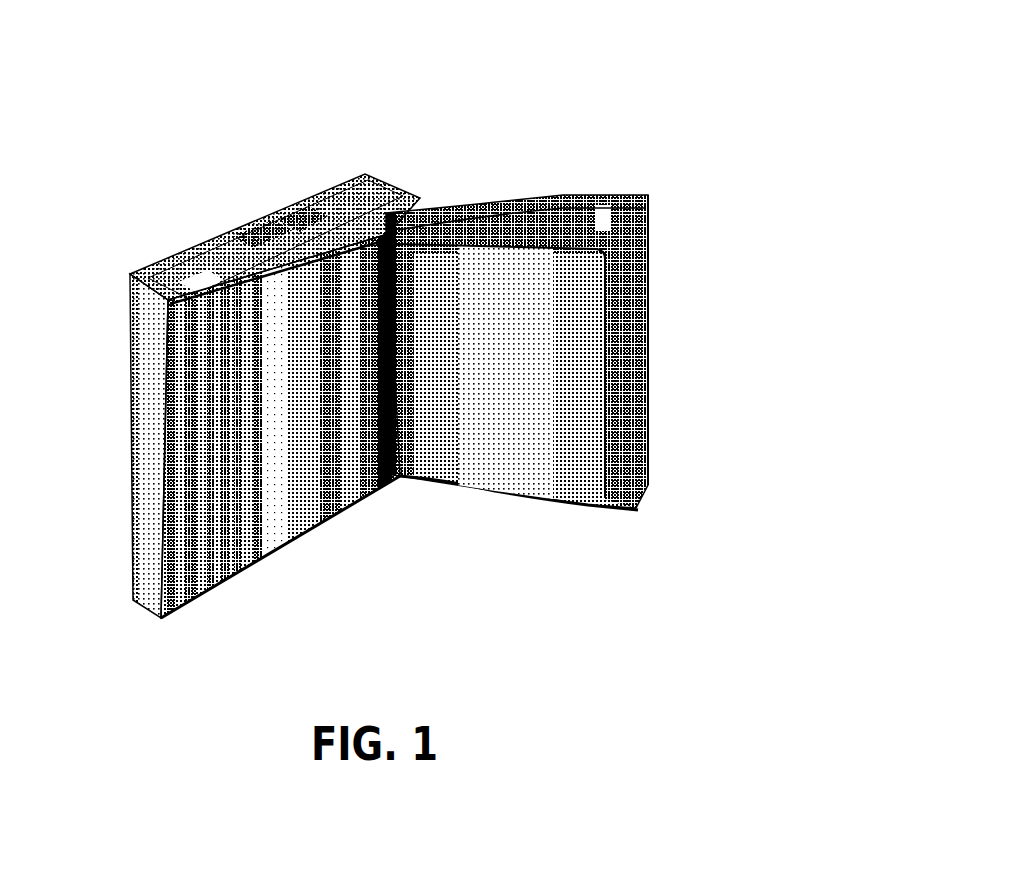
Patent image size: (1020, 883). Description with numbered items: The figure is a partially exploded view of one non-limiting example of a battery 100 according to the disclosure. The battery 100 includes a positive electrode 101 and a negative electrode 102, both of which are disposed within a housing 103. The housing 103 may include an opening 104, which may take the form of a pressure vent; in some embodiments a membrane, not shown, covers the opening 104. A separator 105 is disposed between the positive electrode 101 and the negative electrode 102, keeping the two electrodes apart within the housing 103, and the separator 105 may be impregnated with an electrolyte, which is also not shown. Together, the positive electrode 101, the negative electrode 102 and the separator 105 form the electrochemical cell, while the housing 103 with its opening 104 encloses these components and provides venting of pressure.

The battery 100 is at (391, 346).
The positive electrode 101 is at (488, 457).
The negative electrode 102 is at (550, 187).
The housing 103 is at (144, 567).
The opening 104 is at (187, 247).
The separator 105 is at (642, 433).